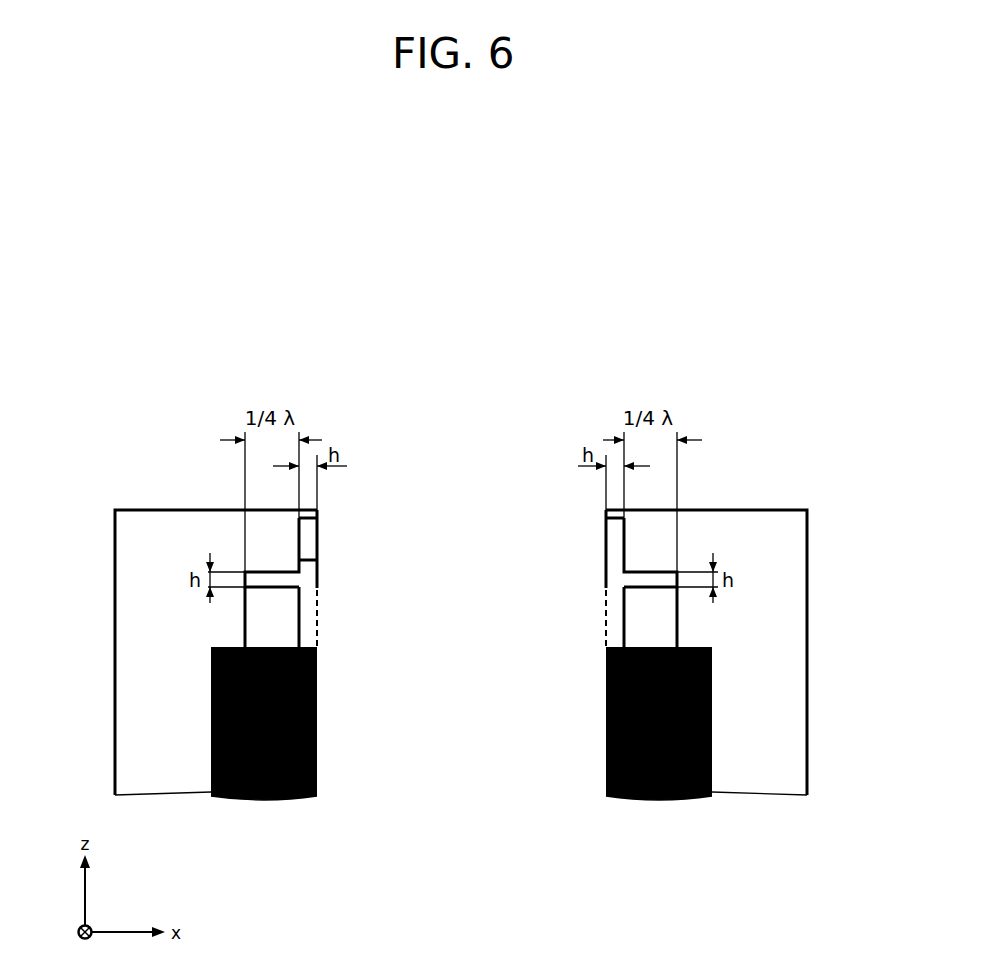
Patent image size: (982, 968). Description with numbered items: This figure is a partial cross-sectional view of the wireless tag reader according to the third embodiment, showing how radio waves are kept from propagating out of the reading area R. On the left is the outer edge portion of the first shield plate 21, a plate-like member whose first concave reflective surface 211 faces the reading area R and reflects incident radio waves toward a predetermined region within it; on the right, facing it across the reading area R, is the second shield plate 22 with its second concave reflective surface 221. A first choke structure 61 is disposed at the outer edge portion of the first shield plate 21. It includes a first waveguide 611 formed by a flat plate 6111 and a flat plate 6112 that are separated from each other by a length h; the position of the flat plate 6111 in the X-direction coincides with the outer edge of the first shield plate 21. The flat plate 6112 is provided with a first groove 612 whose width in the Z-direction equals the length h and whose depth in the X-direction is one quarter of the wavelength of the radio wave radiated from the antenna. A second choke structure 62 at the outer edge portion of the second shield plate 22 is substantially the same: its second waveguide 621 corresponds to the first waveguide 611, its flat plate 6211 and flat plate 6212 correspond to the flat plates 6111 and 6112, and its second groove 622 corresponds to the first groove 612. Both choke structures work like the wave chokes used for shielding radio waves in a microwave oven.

The first choke structure 61 is at (172, 540).
The first waveguide 611 is at (328, 578).
The flat plate 6111 is at (318, 534).
The flat plate 6112 is at (318, 560).
The first groove 612 is at (272, 598).
The first shield plate 21 is at (211, 762).
The first concave reflective surface 211 is at (270, 800).
The second choke structure 62 is at (753, 540).
The second waveguide 621 is at (593, 578).
The flat plate 6211 is at (615, 532).
The flat plate 6212 is at (606, 562).
The second groove 622 is at (652, 598).
The second shield plate 22 is at (712, 762).
The second concave reflective surface 221 is at (652, 800).
The reading area R is at (479, 483).